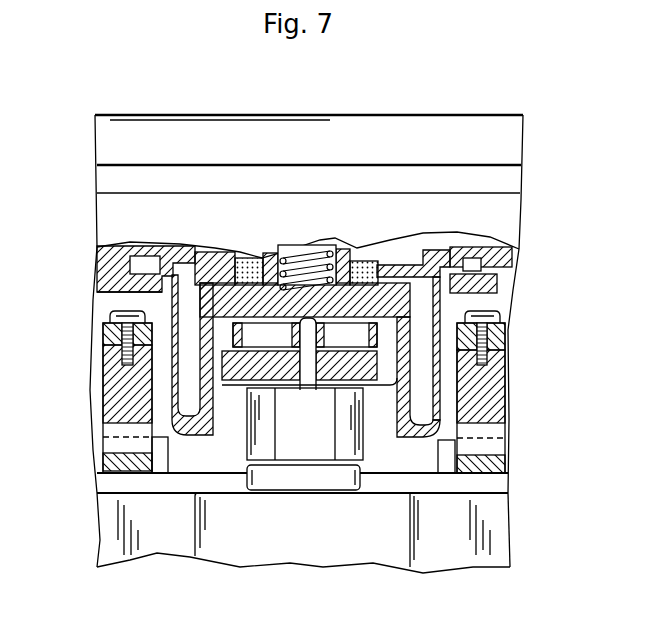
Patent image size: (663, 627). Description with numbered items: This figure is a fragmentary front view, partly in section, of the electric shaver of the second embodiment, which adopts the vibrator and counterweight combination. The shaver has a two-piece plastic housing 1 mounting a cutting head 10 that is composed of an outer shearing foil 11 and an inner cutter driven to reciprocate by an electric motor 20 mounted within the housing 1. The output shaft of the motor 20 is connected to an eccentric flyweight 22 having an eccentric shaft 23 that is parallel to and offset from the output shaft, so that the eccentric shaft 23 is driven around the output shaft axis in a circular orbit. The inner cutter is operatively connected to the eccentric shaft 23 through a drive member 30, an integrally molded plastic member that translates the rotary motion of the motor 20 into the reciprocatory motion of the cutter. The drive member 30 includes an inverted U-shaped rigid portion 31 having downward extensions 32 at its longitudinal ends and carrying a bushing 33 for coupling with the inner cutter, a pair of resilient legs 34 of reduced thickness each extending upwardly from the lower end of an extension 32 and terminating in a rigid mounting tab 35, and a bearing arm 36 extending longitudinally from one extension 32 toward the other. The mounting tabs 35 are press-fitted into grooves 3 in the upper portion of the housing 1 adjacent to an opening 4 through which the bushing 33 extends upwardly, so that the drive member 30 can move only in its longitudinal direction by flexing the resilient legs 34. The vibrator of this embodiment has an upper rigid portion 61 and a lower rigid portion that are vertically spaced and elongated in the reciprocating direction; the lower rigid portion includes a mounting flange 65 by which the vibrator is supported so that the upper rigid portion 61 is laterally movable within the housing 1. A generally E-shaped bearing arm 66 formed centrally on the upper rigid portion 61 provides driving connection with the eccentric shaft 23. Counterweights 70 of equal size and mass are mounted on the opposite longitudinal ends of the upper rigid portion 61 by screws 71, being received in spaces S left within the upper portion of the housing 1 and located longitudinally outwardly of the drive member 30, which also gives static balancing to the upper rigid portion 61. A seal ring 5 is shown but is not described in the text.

The housing 1 is at (510, 485).
The grooves 3 is at (100, 291).
The opening 4 is at (207, 252).
The seal ring 5 is at (103, 465).
The cutting head 10 is at (103, 112).
The outer shearing foil 11 is at (491, 114).
The electric motor 20 is at (317, 543).
The eccentric flyweight 22 is at (361, 442).
The eccentric shaft 23 is at (310, 330).
The drive member 30 is at (422, 441).
The rigid portion 31 is at (255, 263).
The downward extensions 32 is at (413, 358).
The bushing 33 is at (340, 258).
The resilient legs 34 is at (440, 313).
The mounting tab 35 is at (127, 261).
The bearing arm 36 is at (235, 383).
The upper rigid portion 61 is at (507, 338).
The mounting flange 65 is at (112, 475).
The bearing arm 66 is at (238, 265).
The counterweights 70 is at (110, 387).
The screws 71 is at (112, 323).
The spaces S is at (97, 372).